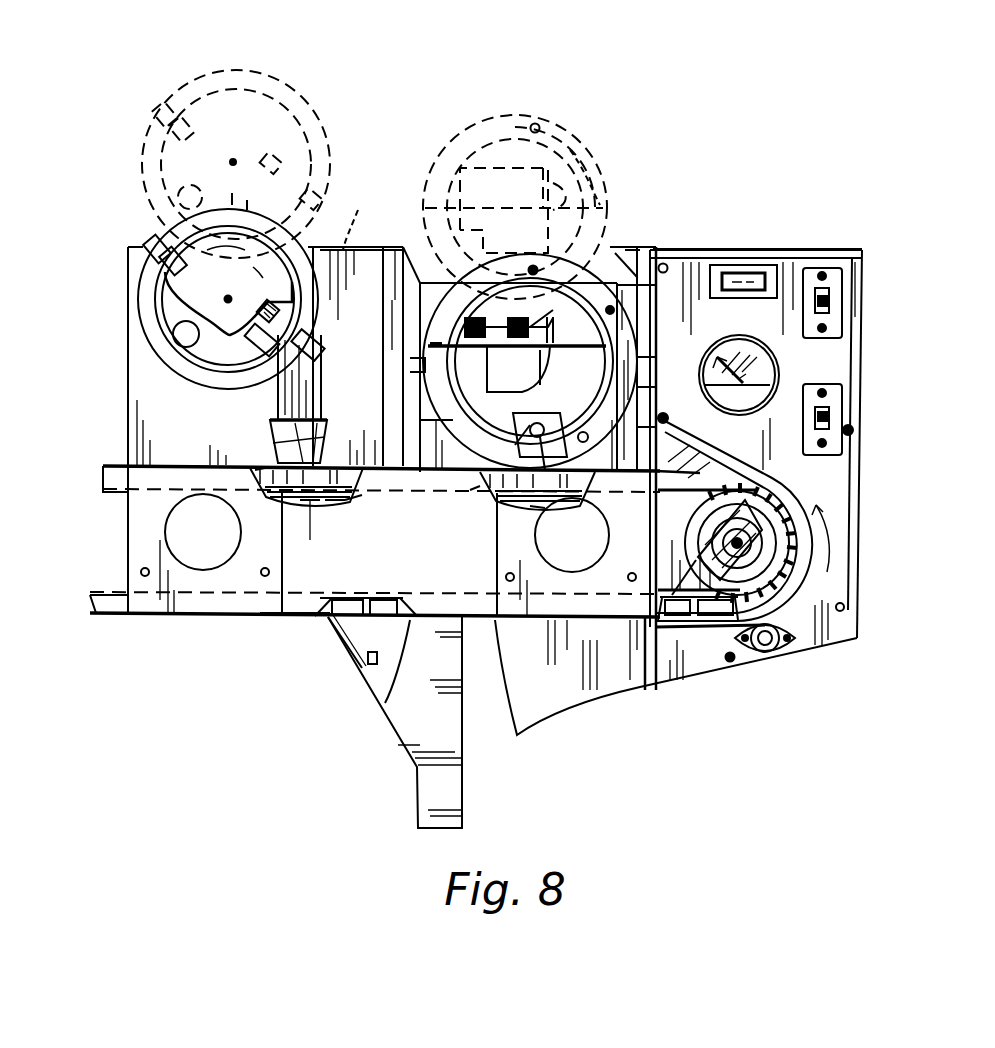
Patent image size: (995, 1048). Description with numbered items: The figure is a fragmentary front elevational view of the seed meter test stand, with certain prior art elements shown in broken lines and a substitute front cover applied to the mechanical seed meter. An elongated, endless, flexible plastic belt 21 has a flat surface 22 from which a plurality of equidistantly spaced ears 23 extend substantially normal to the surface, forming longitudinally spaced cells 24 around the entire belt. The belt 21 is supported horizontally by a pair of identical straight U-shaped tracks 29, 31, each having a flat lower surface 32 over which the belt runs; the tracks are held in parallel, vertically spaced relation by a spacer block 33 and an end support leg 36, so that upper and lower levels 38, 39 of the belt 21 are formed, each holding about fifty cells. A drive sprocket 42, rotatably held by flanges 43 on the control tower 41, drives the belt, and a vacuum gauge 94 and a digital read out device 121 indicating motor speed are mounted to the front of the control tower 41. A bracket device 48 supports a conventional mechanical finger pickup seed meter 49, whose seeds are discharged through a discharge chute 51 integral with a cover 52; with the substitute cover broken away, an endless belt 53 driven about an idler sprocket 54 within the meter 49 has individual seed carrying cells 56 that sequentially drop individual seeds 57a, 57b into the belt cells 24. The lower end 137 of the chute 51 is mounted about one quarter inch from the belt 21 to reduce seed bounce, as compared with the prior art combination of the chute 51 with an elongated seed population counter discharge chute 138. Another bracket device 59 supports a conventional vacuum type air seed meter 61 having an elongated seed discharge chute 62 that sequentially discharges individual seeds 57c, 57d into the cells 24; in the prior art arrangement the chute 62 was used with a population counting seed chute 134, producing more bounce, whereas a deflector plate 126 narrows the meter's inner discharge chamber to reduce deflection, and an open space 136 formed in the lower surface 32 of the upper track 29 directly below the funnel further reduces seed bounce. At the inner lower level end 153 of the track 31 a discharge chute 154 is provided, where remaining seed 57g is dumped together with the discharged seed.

The belt 21 is at (270, 451).
The flat surface 22 is at (352, 502).
The ears 23 is at (342, 508).
The cells 24 is at (482, 486).
The track 29 is at (103, 472).
The track 31 is at (106, 616).
The flat lower surface 32 is at (277, 505).
The spacer block 33 is at (212, 578).
The end support leg 36 is at (548, 718).
The upper level 38 is at (720, 459).
The lower level 39 is at (724, 636).
The control tower 41 is at (761, 207).
The drive sprocket 42 is at (785, 590).
The flanges 43 is at (697, 560).
The bracket device 48 is at (622, 247).
The mechanical seed meter 49 is at (528, 98).
The discharge chute 51 is at (585, 425).
The cover 52 is at (572, 145).
The endless belt 53 is at (525, 432).
The idler sprocket 54 is at (490, 385).
The seed carrying cells 56 is at (520, 452).
The seed 57a is at (572, 535).
The seed 57b is at (510, 505).
The seed 57c is at (327, 460).
The seed 57d is at (255, 468).
The remaining seed 57g is at (365, 660).
The bracket device 59 is at (363, 247).
The air seed meter 61 is at (287, 66).
The seed discharge chute 62 is at (322, 400).
The vacuum gauge 94 is at (767, 366).
The digital read out device 121 is at (748, 280).
The deflector plate 126 is at (255, 373).
The population counting seed chute 134 is at (345, 205).
The open space 136 is at (312, 510).
The lower end 137 is at (590, 438).
The seed population counter discharge chute 138 is at (615, 248).
The inner lower level end 153 is at (266, 638).
The discharge chute 154 is at (418, 725).